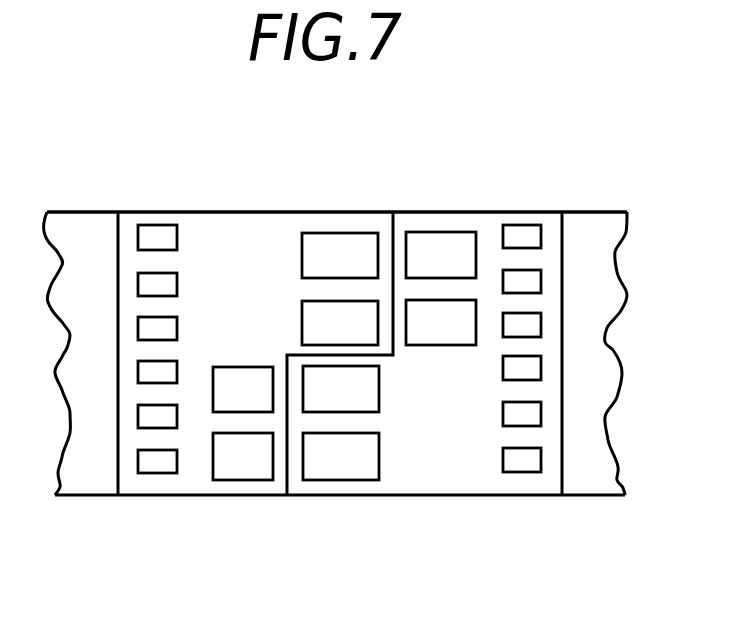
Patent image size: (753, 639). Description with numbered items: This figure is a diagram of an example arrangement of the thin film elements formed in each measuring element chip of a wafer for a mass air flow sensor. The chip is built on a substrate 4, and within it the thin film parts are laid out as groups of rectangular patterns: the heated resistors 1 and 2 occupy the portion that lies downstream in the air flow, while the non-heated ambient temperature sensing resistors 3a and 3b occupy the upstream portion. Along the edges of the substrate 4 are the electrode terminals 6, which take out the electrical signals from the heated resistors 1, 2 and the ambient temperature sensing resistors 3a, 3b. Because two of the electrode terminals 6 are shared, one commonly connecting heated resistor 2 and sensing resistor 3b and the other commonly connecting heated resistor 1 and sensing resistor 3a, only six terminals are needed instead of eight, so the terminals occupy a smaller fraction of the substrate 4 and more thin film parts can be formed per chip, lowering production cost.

The heated resistor 1 is at (302, 300).
The heated resistor 2 is at (334, 233).
The non-heated ambient temperature sensing resistor 3a is at (213, 412).
The non-heated ambient temperature sensing resistor 3b is at (255, 480).
The substrate 4 is at (483, 212).
The electrode terminals 6 is at (142, 475).